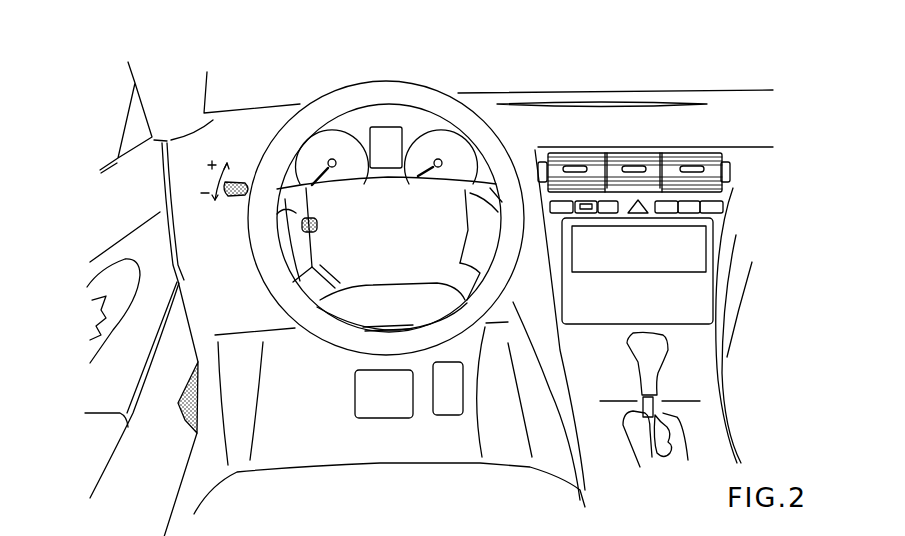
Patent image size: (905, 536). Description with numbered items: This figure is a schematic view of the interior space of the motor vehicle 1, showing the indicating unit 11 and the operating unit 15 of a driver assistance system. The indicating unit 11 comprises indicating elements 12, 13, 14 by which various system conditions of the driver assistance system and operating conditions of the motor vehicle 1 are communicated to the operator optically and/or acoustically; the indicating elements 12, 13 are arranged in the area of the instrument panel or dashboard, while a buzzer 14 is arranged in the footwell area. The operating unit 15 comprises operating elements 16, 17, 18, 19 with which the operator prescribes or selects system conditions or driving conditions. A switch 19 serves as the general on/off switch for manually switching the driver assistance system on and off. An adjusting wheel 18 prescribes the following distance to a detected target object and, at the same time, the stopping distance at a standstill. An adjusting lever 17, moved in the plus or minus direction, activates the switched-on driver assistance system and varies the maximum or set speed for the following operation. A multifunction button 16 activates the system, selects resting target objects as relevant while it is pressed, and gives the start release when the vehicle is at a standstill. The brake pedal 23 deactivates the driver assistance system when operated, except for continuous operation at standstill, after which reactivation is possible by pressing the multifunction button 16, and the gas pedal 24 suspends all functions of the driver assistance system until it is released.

The motor vehicle 1 is at (178, 56).
The indicating unit 11 is at (463, 13).
The indicating element 12 is at (392, 140).
The indicating element 13 is at (693, 240).
The buzzer 14 is at (183, 418).
The operating unit 15 is at (281, 187).
The multifunction button 16 is at (302, 226).
The adjusting lever 17 is at (238, 180).
The adjusting wheel 18 is at (587, 201).
The switch 19 is at (558, 201).
The brake pedal 23 is at (375, 407).
The gas pedal 24 is at (448, 407).